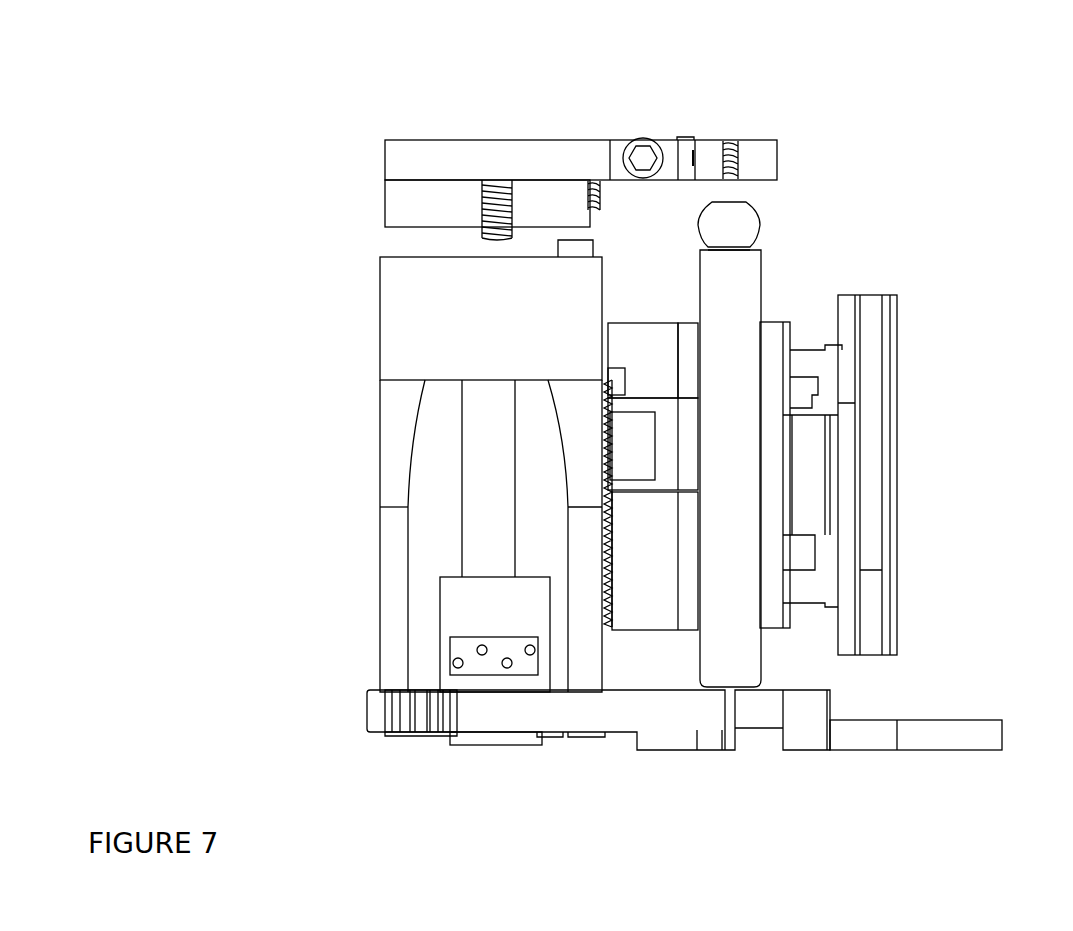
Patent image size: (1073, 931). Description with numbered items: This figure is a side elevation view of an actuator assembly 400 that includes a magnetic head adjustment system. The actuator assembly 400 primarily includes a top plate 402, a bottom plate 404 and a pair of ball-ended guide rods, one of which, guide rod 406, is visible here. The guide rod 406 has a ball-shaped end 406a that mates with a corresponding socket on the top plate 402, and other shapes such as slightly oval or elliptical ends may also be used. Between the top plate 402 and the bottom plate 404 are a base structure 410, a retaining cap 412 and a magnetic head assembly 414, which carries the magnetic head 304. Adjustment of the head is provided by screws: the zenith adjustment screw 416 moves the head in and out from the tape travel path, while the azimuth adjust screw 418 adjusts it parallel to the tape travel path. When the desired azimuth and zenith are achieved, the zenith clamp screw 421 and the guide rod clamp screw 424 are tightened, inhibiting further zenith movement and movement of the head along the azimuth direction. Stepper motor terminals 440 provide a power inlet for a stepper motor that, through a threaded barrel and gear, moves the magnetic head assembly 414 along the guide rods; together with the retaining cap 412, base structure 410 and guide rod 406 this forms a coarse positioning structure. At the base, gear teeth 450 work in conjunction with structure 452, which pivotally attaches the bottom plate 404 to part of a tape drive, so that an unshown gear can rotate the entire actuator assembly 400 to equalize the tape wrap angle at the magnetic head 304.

The actuator assembly 400 is at (243, 212).
The top plate 402 is at (430, 173).
The bottom plate 404 is at (604, 723).
The ball-ended guide rod 406 is at (742, 298).
The ball-shaped end of guide rod 406a is at (747, 234).
The base structure 410 is at (502, 473).
The retaining cap 412 is at (499, 341).
The magnetic head assembly 414 is at (672, 363).
The zenith adjustment screw 416 is at (602, 193).
The azimuth adjust screw 418 is at (632, 140).
The zenith clamp screw 421 is at (497, 192).
The guide rod clamp screw 424 is at (728, 140).
The stepper motor terminals 440 is at (528, 640).
The gear teeth 450 is at (411, 700).
The structure 452 is at (949, 748).
The magnetic head 304 is at (904, 430).